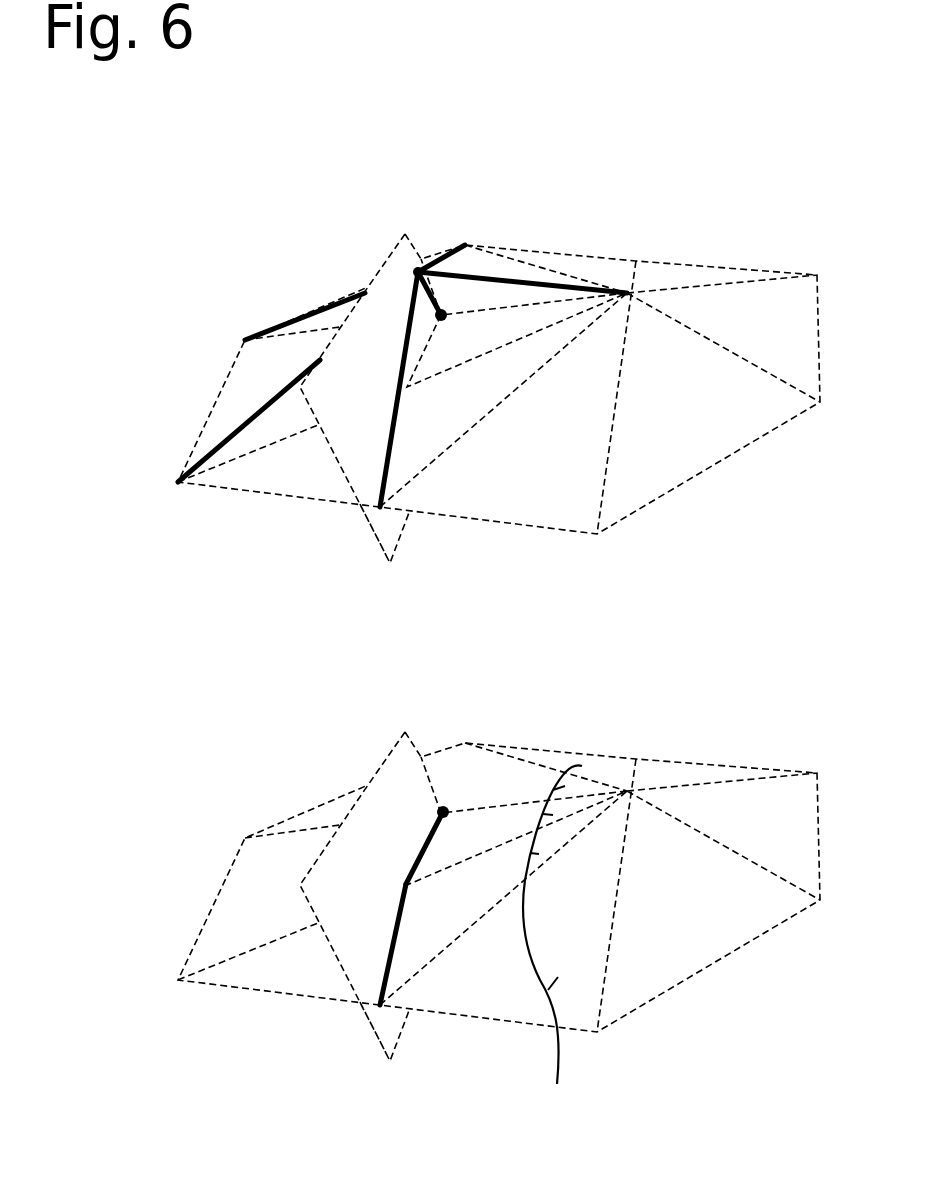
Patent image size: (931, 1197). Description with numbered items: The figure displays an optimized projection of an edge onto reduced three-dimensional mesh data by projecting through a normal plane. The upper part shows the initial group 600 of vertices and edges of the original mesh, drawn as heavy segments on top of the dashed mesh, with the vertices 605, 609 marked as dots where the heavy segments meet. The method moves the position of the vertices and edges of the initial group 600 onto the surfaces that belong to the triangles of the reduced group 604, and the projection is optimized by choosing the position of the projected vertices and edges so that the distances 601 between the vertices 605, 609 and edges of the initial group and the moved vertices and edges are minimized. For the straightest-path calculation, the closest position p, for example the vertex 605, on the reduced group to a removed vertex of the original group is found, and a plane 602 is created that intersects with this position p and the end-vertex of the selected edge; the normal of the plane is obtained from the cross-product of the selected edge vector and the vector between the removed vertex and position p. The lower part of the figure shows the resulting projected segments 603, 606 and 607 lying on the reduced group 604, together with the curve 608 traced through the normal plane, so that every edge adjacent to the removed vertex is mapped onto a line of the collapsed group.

The initial group 600 is at (391, 458).
The distance 601 is at (435, 291).
The plane 602 is at (348, 361).
The deformed first bone segment 603 is at (434, 830).
The reduced group 604 is at (391, 953).
The vertex 605 is at (443, 311).
The deformed skeleton joint 606 is at (446, 810).
The fourth skeleton bone segment 607 is at (265, 410).
The deformation curve 608 is at (565, 948).
The vertex 609 is at (418, 271).